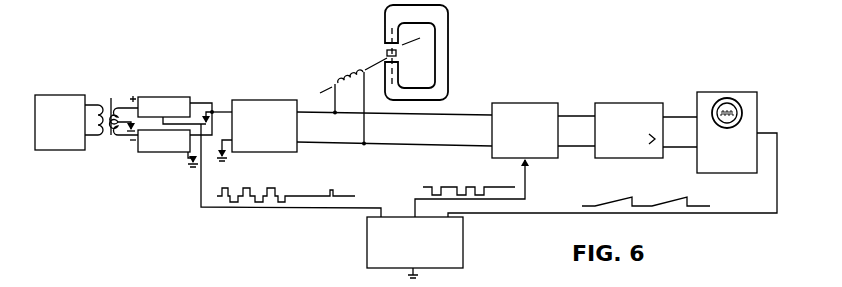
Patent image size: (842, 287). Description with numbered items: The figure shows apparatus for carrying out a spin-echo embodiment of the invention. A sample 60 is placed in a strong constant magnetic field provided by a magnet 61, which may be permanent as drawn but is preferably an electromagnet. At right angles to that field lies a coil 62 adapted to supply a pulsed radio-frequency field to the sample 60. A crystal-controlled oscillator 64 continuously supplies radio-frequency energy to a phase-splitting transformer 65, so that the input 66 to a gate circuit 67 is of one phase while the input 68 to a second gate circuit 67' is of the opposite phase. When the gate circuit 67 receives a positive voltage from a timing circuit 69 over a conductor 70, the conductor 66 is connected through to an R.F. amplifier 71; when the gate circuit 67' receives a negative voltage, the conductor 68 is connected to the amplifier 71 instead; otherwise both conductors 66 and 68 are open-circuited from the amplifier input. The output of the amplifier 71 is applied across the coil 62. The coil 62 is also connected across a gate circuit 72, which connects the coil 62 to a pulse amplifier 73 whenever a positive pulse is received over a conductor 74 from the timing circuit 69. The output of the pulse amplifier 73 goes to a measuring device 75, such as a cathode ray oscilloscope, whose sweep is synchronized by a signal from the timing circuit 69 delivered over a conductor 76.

The sample 60 is at (388, 52).
The magnet 61 is at (450, 47).
The coil 62 is at (350, 79).
The crystal-controlled oscillator 64 is at (55, 95).
The phase-splitting transformer 65 is at (110, 100).
The input conductor 66 is at (127, 107).
The gate circuit 67 is at (164, 91).
The gate circuit 67' is at (168, 154).
The input conductor 68 is at (137, 140).
The timing circuit 69 is at (367, 240).
The conductor 70 is at (272, 208).
The R.F. amplifier 71 is at (275, 100).
The gate circuit 72 is at (510, 103).
The pulse amplifier 73 is at (608, 103).
The conductor 74 is at (527, 194).
The measuring device 75 is at (713, 92).
The conductor 76 is at (727, 212).